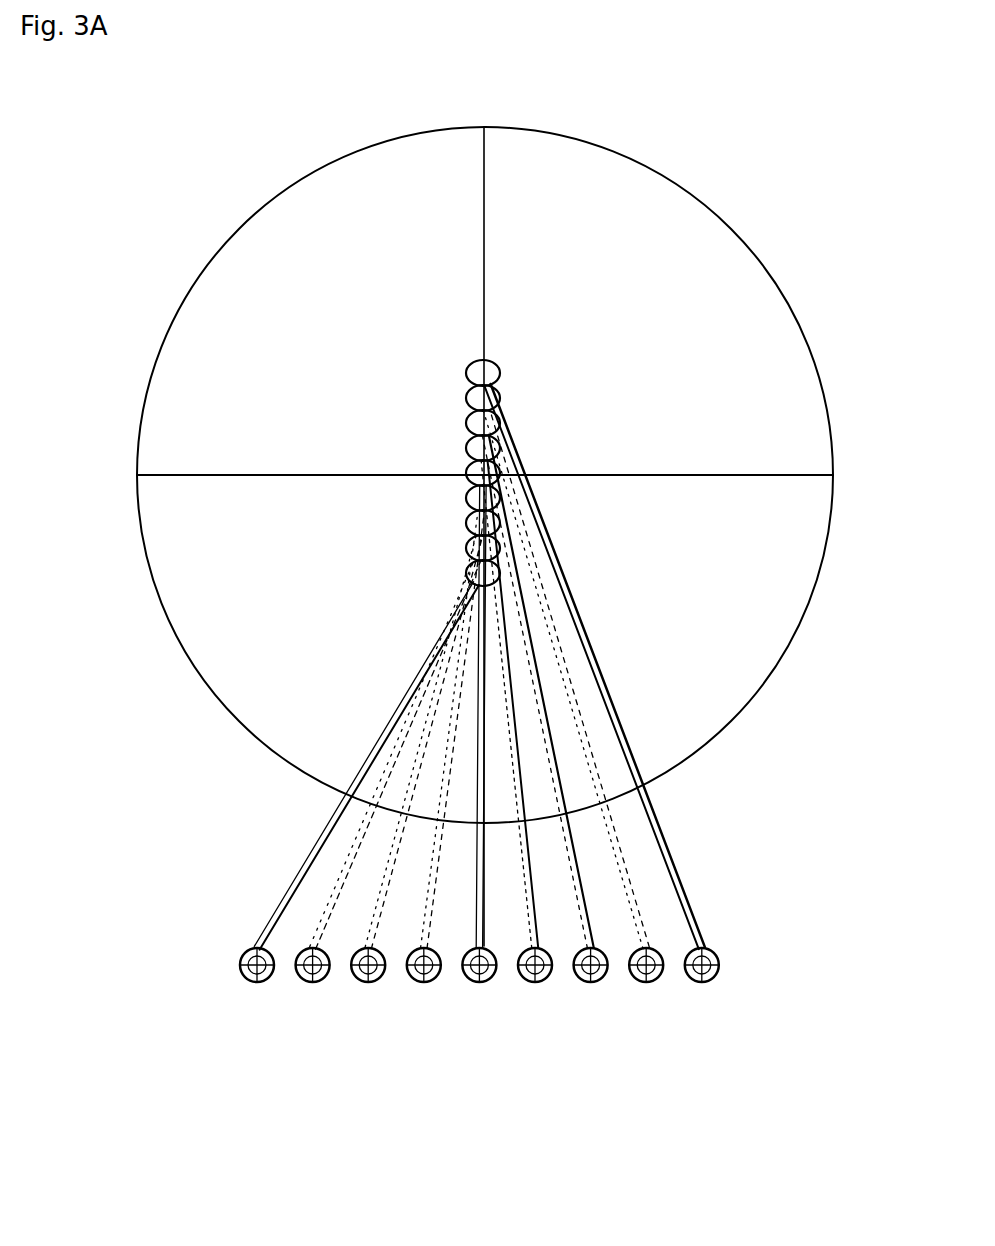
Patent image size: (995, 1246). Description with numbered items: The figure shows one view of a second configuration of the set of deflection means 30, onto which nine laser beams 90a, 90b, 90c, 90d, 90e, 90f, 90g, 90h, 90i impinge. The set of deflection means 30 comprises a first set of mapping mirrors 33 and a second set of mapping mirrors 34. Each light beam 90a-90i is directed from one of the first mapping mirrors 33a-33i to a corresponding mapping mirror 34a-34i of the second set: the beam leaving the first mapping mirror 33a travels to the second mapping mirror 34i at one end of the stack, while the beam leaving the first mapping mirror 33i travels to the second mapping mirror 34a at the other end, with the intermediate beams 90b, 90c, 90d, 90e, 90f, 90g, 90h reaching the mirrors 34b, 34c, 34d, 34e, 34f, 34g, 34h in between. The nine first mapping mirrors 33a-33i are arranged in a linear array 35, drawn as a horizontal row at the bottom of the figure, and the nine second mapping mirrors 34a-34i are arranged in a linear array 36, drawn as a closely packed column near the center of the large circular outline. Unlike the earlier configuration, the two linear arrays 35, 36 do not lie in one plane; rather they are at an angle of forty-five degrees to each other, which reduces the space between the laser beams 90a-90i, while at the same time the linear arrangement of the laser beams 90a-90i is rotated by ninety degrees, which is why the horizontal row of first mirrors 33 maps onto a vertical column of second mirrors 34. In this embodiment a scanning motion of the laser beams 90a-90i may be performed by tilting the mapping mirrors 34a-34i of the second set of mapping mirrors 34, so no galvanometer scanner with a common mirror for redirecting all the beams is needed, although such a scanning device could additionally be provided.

The set of deflection means 30 is at (810, 220).
The first set of mapping mirrors 33 is at (397, 1018).
The linear array 35 is at (397, 1018).
The first mapping mirror 33a is at (240, 983).
The first mapping mirror 33i is at (700, 983).
The second set of mapping mirrors 34 is at (457, 452).
The linear array 36 is at (457, 452).
The mapping mirror of the second set 34a is at (478, 362).
The mapping mirror of the second set 34b is at (468, 392).
The mapping mirror of the second set 34c is at (467, 420).
The mapping mirror of the second set 34d is at (466, 447).
The mapping mirror of the second set 34e is at (464, 472).
The mapping mirror of the second set 34f is at (464, 493).
The mapping mirror of the second set 34g is at (466, 518).
The mapping mirror of the second set 34h is at (467, 548).
The mapping mirror of the second set 34i is at (467, 571).
The laser beam 90a is at (267, 943).
The laser beam 90b is at (327, 923).
The laser beam 90c is at (377, 907).
The laser beam 90d is at (427, 898).
The laser beam 90e is at (477, 870).
The laser beam 90f is at (527, 853).
The laser beam 90g is at (580, 888).
The laser beam 90h is at (632, 913).
The laser beam 90i is at (698, 927).